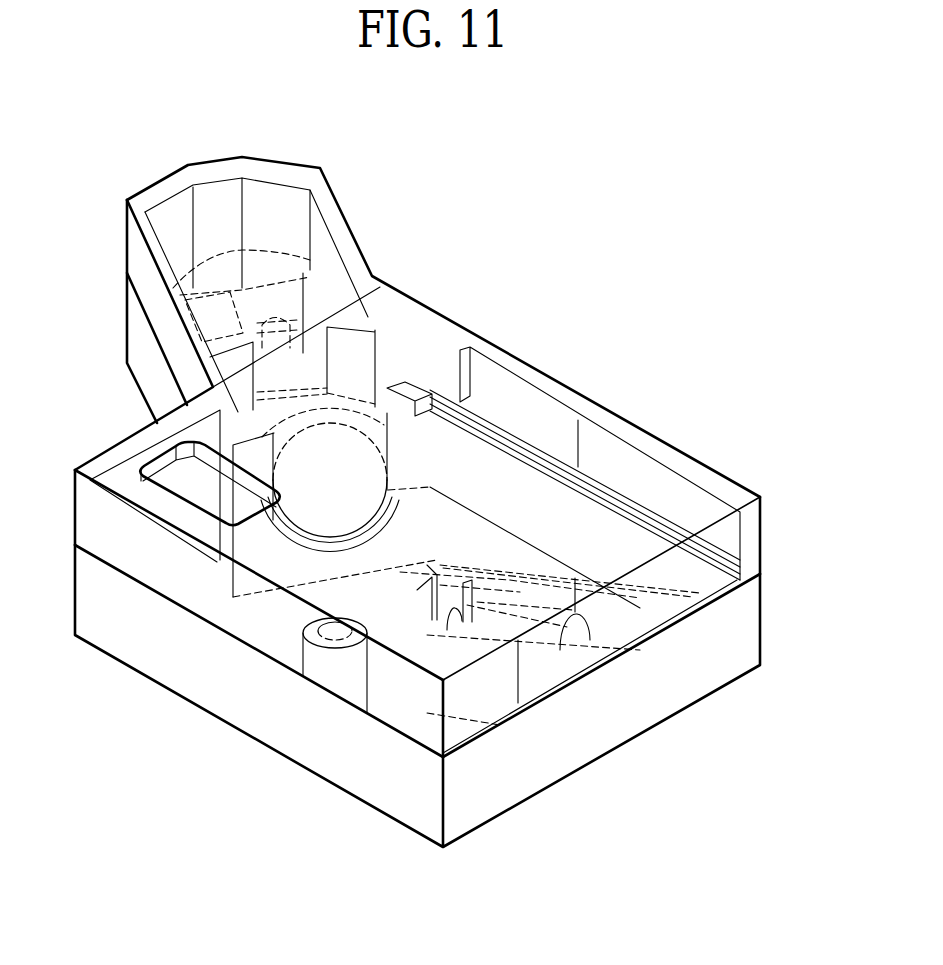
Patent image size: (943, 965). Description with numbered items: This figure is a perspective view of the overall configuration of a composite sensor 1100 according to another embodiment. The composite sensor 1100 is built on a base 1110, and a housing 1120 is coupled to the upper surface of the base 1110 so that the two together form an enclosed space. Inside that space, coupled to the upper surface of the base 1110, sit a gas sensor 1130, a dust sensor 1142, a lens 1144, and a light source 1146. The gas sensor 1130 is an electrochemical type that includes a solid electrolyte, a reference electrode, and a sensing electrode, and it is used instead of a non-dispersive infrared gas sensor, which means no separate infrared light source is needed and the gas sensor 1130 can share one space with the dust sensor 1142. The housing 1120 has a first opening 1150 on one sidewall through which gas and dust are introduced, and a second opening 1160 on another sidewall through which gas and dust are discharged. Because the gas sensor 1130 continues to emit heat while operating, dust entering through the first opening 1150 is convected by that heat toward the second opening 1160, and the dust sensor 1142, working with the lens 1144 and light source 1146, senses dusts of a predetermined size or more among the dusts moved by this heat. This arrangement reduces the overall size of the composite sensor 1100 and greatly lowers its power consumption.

The composite sensor 1100 is at (575, 148).
The base 1110 is at (737, 622).
The housing 1120 is at (717, 487).
The gas sensor 1130 is at (340, 683).
The dust sensor 1142 is at (268, 348).
The lens 1144 is at (337, 407).
The light source 1146 is at (503, 610).
The first opening 1150 is at (162, 458).
The second opening 1160 is at (497, 375).